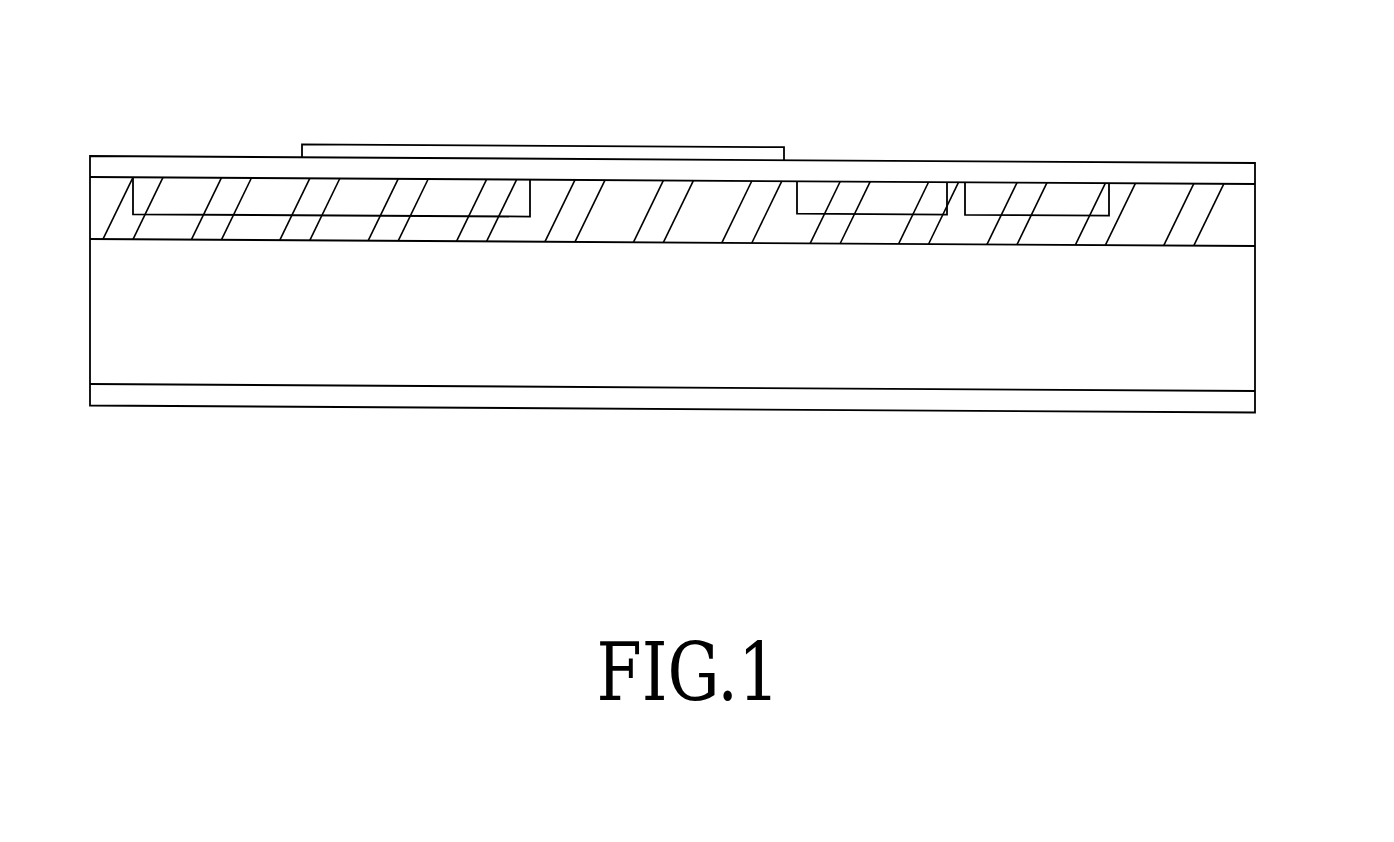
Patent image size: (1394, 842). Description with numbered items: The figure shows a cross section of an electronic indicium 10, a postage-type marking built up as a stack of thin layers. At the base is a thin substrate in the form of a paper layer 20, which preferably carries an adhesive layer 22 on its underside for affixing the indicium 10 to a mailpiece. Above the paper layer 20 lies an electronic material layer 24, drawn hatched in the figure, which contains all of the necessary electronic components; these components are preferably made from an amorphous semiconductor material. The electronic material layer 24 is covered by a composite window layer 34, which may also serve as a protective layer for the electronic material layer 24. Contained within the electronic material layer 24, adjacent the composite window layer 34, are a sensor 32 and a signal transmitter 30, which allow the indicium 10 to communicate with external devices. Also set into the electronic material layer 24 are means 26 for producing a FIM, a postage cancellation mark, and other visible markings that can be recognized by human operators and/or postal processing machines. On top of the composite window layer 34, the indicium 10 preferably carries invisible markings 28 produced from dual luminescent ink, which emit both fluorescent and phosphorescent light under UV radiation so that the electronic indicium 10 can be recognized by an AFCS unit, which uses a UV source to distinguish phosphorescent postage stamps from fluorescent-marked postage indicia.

The indicium 10 is at (1303, 300).
The paper layer 20 is at (1003, 350).
The adhesive layer 22 is at (813, 399).
The electronic material layer 24 is at (1155, 222).
The means for producing a FIM, postage cancellation mark, and other visible markings 26 is at (205, 193).
The invisible markings 28 is at (578, 150).
The signal transmitter 30 is at (982, 200).
The sensor 32 is at (852, 200).
The composite window layer 34 is at (273, 172).